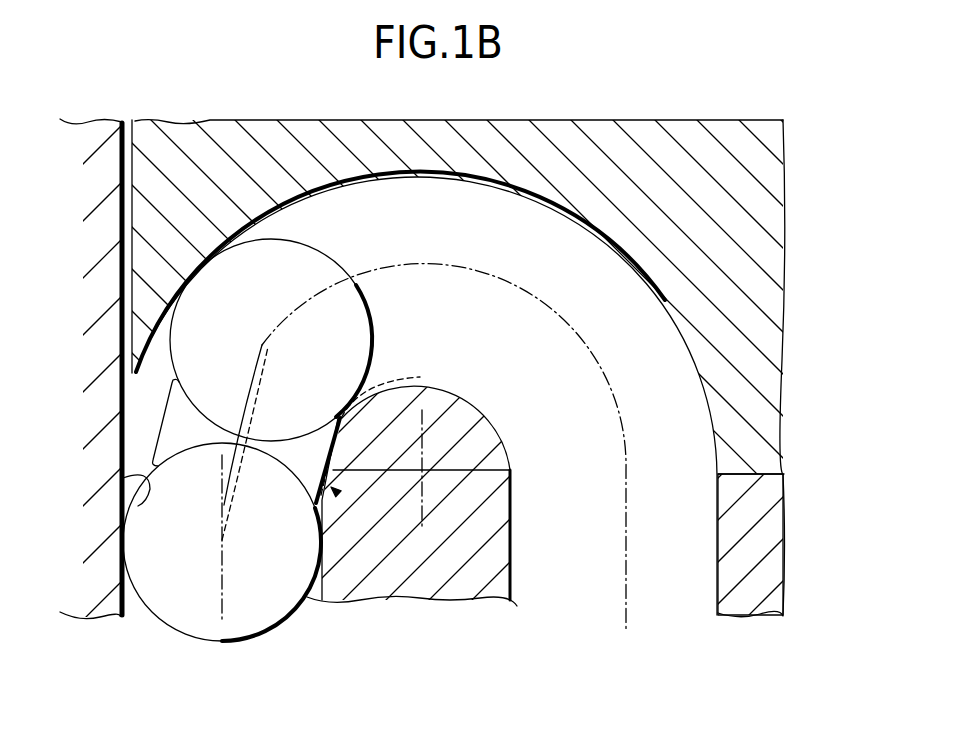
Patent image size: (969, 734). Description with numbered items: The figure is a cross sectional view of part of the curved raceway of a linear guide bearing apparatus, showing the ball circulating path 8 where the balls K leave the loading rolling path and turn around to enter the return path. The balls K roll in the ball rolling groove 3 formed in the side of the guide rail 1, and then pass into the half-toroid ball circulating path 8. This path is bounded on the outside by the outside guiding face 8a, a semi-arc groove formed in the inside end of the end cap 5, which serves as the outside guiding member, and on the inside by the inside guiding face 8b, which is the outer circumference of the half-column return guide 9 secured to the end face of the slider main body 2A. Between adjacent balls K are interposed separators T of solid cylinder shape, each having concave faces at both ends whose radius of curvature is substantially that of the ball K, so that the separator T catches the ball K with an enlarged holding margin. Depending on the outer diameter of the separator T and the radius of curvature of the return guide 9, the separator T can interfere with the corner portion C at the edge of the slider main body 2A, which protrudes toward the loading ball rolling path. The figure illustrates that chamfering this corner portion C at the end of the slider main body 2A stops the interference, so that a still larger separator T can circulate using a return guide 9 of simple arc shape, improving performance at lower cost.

The end cap 5 is at (562, 143).
The guide rail 1 is at (95, 351).
The separator T is at (172, 437).
The ball rolling groove 3 is at (123, 478).
The ball K is at (318, 270).
The ball circulating path 8 is at (661, 434).
The outside guiding face 8a is at (677, 320).
The inside guiding face 8b is at (470, 406).
The return guide 9 is at (463, 455).
The slider main body 2A is at (350, 592).
The corner portion C is at (338, 492).